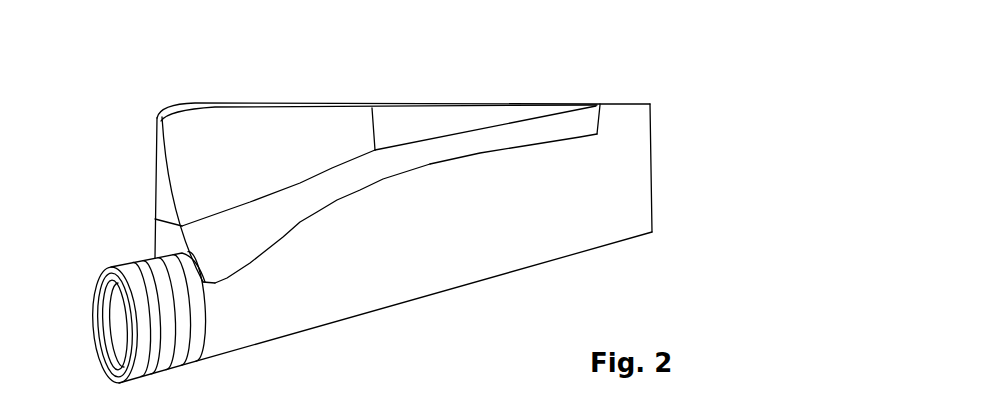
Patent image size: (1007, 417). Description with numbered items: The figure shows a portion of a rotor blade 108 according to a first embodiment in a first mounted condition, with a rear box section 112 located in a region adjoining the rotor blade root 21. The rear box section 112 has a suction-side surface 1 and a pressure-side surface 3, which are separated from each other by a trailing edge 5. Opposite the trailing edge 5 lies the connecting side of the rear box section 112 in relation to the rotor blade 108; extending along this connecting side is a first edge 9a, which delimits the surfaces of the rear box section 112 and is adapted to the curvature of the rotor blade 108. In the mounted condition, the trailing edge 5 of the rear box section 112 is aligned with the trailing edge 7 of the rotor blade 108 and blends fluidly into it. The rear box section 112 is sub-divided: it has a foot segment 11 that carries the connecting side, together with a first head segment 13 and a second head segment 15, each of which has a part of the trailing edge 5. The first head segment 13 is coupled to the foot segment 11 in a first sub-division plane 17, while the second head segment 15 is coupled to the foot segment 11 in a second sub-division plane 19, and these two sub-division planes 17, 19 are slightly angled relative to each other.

The suction-side surface 1 is at (134, 169).
The pressure-side surface 3 is at (276, 138).
The trailing edge 5 is at (514, 91).
The trailing edge of the rotor blade 7 is at (618, 91).
The first edge 9a is at (320, 224).
The foot segment 11 is at (233, 258).
The first head segment 13 is at (193, 178).
The second head segment 15 is at (420, 125).
The first sub-division plane 17 is at (343, 174).
The second sub-division plane 19 is at (485, 141).
The rotor blade root 21 is at (80, 346).
The rotor blade 108 is at (593, 215).
The rear box section 112 is at (380, 91).